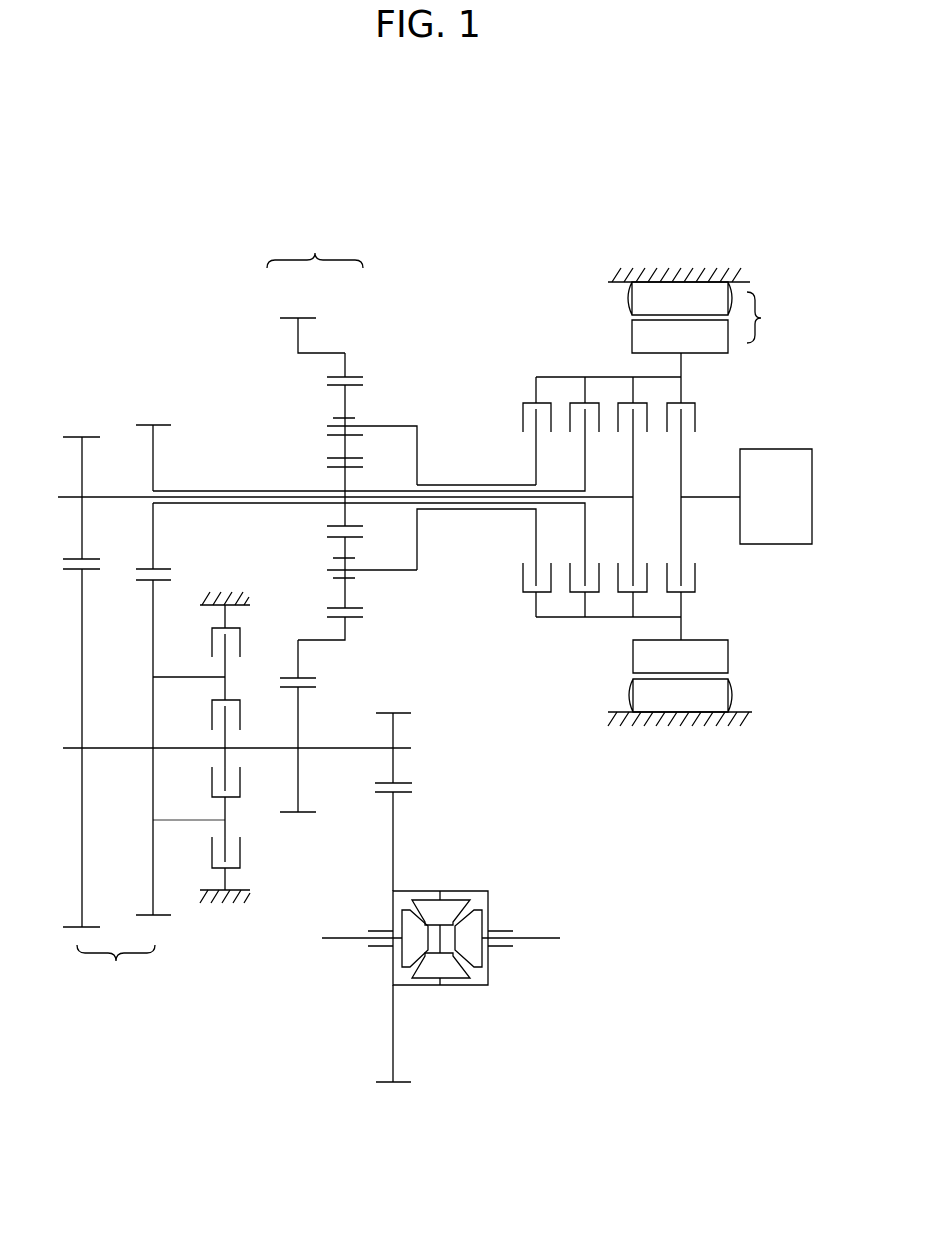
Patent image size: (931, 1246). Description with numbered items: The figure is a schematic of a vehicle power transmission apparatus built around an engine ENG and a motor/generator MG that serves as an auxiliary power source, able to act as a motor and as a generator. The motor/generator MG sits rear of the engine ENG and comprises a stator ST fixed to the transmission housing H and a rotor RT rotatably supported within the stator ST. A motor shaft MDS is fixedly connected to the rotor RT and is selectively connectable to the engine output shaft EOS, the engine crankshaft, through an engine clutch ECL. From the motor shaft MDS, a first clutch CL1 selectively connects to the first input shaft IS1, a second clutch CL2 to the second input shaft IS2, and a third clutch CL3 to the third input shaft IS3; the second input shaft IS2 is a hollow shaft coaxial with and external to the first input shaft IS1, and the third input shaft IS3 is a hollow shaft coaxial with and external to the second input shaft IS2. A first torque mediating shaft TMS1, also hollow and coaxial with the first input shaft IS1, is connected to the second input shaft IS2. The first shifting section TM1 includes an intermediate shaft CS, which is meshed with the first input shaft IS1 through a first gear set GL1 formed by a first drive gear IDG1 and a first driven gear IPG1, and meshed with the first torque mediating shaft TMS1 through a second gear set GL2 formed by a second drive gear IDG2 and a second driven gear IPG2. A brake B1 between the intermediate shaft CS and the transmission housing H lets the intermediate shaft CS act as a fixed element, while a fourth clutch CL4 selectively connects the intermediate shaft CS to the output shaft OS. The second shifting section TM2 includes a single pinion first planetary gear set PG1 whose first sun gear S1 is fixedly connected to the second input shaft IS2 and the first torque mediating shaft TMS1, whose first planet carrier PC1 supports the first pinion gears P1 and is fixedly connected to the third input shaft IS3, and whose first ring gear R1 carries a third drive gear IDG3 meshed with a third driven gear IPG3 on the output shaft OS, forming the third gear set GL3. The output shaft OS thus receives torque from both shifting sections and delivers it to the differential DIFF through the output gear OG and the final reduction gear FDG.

The first gear set GL1 is at (81, 418).
The second gear set GL2 is at (149, 406).
The third gear set GL3 is at (298, 827).
The first drive gear IDG1 is at (83, 465).
The second drive gear IDG2 is at (155, 452).
The third drive gear IDG3 is at (296, 338).
The first driven gear IPG1 is at (83, 655).
The second driven gear IPG2 is at (152, 611).
The third driven gear IPG3 is at (300, 705).
The first torque mediating shaft TMS1 is at (276, 489).
The first shifting section TM1 is at (116, 969).
The second shifting section TM2 is at (315, 245).
The first planetary gear set PG1 is at (361, 337).
The first ring gear R1 is at (365, 375).
The first planet carrier PC1 is at (395, 426).
The first pinion gears P1 is at (349, 450).
The first sun gear S1 is at (352, 470).
The first input shaft IS1 is at (268, 505).
The second input shaft IS2 is at (480, 512).
The third input shaft IS3 is at (467, 482).
The first clutch CL1 is at (615, 385).
The second clutch CL2 is at (567, 385).
The third clutch CL3 is at (520, 385).
The fourth clutch CL4 is at (203, 732).
The engine clutch ECL is at (716, 410).
The transmission housing H is at (670, 270).
The stator ST is at (680, 298).
The rotor RT is at (680, 336).
The motor/generator MG is at (768, 317).
The engine ENG is at (776, 496).
The engine output shaft EOS is at (712, 501).
The motor shaft MDS is at (558, 620).
The brake B1 is at (258, 625).
The intermediate shaft CS is at (118, 752).
The output shaft OS is at (340, 752).
The output gear OG is at (395, 763).
The final reduction gear FDG is at (395, 825).
The differential DIFF is at (514, 984).